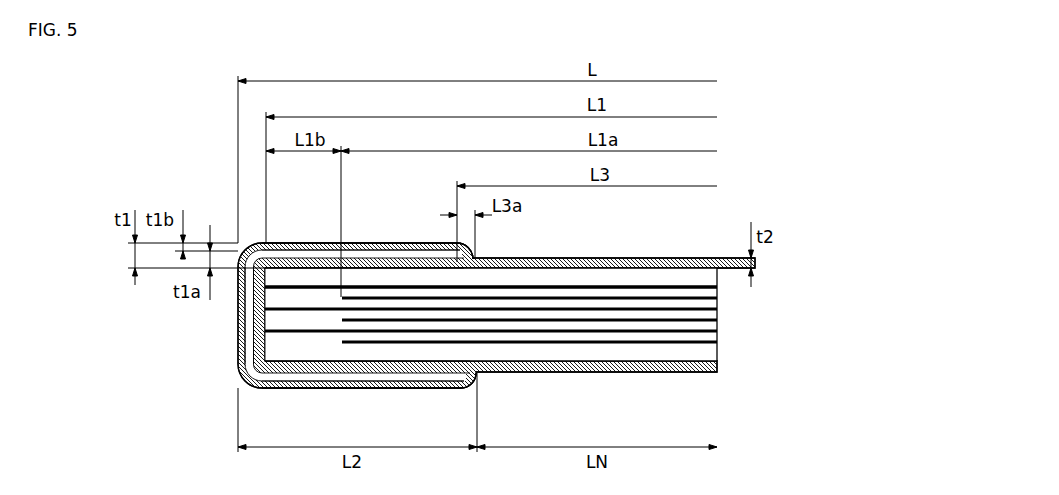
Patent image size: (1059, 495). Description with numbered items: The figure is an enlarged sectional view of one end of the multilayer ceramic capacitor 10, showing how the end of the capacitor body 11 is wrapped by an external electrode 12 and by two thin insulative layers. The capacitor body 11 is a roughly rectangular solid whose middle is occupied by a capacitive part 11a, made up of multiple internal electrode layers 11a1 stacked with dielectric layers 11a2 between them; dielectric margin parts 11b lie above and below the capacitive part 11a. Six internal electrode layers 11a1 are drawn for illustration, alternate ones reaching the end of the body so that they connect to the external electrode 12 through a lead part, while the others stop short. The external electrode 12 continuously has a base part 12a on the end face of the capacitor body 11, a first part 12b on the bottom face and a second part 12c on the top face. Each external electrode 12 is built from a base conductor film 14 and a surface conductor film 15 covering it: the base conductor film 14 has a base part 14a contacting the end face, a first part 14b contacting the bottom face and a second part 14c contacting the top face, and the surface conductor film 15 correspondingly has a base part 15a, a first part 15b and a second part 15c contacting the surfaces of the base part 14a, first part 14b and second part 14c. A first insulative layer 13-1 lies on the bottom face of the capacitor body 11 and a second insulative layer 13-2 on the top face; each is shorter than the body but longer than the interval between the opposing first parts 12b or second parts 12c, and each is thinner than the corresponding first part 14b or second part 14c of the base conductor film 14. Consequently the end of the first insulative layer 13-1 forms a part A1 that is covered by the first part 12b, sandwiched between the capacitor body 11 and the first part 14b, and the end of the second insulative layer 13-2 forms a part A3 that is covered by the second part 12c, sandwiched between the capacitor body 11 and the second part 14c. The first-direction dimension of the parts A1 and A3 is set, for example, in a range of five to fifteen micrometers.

The multilayer ceramic capacitor 10 is at (445, 315).
The capacitor body 11 is at (548, 270).
The capacitive part 11a is at (592, 275).
The internal electrode layer 11a1 is at (542, 344).
The dielectric layer 11a2 is at (590, 341).
The dielectric margin part 11b is at (643, 276).
The external electrode 12 is at (258, 318).
The base part 12a is at (200, 314).
The first part 12b is at (319, 369).
The second part 12c is at (318, 262).
The first insulative layer 13-1 is at (694, 366).
The second insulative layer 13-2 is at (697, 265).
The base conductor film 14 is at (250, 345).
The base part 14a is at (190, 315).
The first part 14b is at (362, 377).
The second part 14c is at (363, 254).
The surface conductor film 15 is at (241, 367).
The base part 15a is at (186, 321).
The first part 15b is at (405, 385).
The second part 15c is at (405, 247).
The part of second insulative layer covered by external electrode A3 is at (474, 259).
The part of first insulative layer covered by external electrode A1 is at (478, 375).